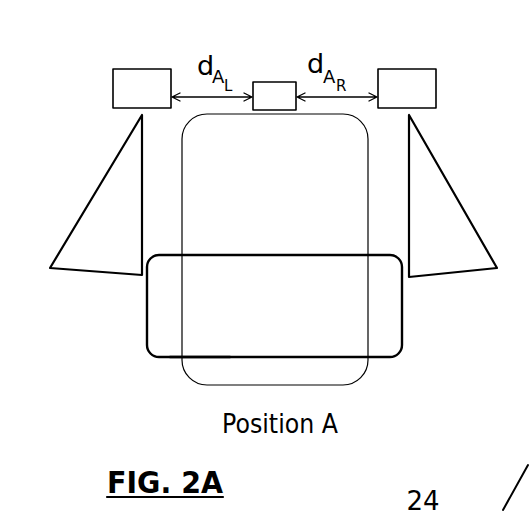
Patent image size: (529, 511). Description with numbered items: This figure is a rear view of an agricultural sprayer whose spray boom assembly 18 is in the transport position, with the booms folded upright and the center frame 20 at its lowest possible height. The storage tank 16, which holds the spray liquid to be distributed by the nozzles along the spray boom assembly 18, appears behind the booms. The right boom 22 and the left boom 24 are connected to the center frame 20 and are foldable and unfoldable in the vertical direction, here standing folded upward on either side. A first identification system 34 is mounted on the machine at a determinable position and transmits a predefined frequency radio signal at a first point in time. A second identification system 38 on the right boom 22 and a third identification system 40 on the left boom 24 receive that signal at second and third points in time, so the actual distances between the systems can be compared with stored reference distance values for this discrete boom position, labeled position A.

The storage tank 16 is at (371, 379).
The spray boom assembly 18 is at (431, 303).
The center frame 20 is at (199, 358).
The right boom 22 is at (460, 205).
The left boom 24 is at (83, 213).
The first identification system 34 is at (272, 81).
The second identification system 38 is at (403, 68).
The third identification system 40 is at (143, 68).